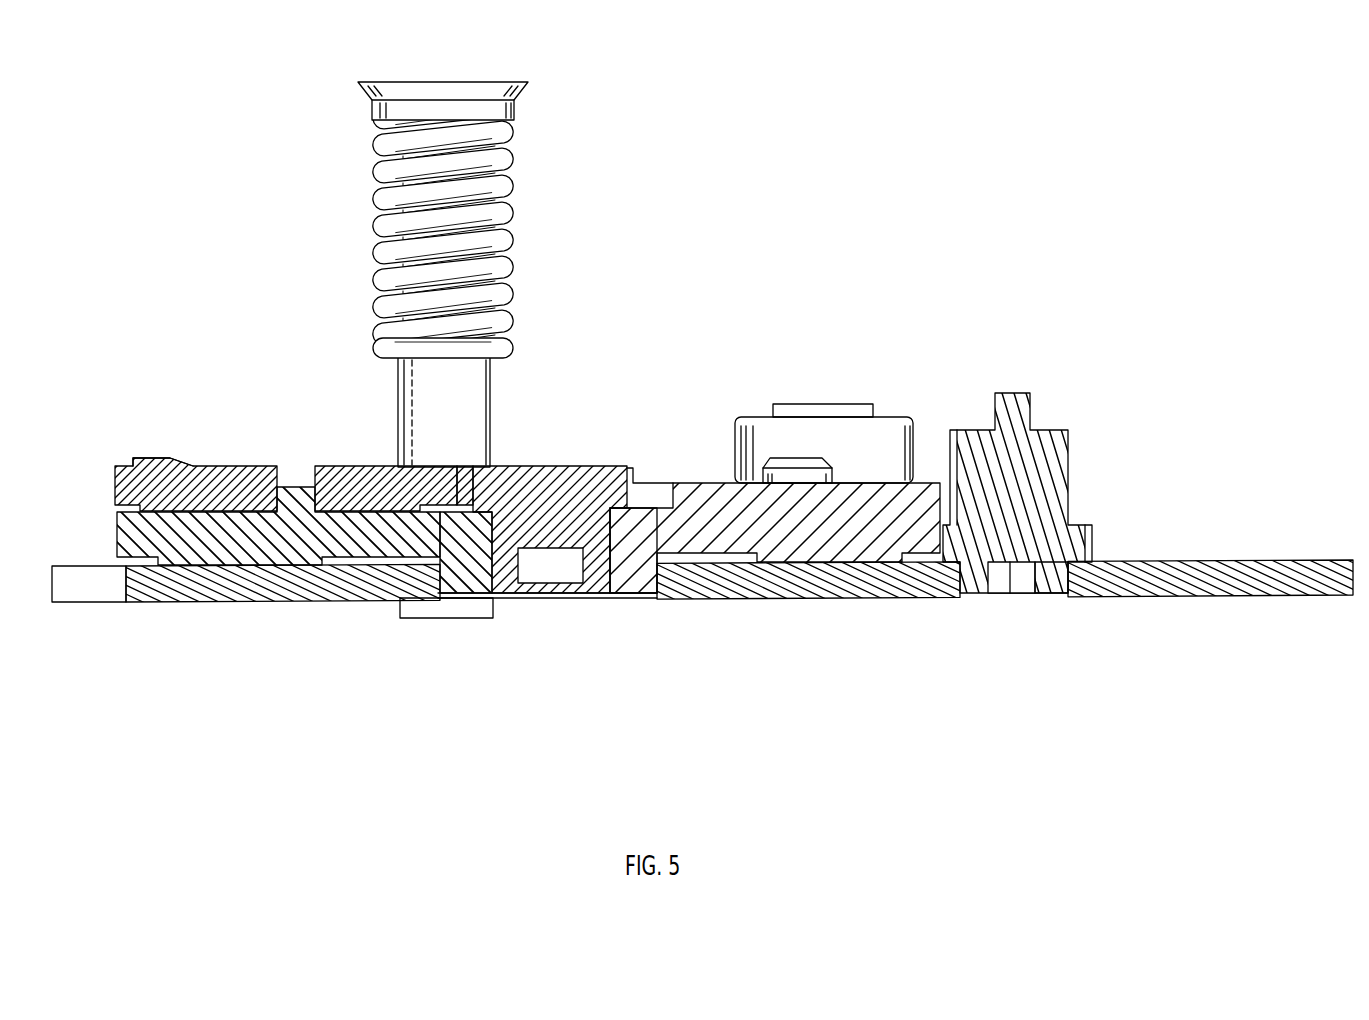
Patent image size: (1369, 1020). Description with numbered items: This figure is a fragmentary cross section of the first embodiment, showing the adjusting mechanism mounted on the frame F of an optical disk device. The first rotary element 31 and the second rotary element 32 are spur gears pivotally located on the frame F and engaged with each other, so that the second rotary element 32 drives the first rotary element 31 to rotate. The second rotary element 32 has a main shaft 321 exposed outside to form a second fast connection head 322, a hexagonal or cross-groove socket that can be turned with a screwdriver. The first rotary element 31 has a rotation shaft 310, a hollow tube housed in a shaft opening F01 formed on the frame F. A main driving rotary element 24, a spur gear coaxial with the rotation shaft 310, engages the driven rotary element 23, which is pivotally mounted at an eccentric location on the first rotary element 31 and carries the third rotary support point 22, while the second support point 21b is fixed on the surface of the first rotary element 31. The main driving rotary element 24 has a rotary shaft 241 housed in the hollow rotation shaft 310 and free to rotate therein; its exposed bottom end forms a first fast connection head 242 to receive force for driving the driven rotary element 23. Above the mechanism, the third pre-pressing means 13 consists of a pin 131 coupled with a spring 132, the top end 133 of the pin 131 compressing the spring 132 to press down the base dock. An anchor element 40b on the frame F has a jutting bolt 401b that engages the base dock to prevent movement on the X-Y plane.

The third pre-pressing means 13 is at (438, 252).
The pin 131 is at (475, 378).
The spring 132 is at (500, 150).
The top end 133 is at (493, 88).
The third rotary support point 22 is at (150, 455).
The driven rotary element 23 is at (230, 478).
The main driving rotary element 24 is at (547, 530).
The rotary shaft 241 is at (499, 578).
The first fast connection head 242 is at (542, 556).
The first rotary element 31 is at (773, 540).
The rotation shaft 310 is at (640, 575).
The second support point 21b is at (795, 458).
The jutting bolt 401b is at (830, 404).
The anchor element 40b is at (900, 435).
The second rotary element 32 is at (1014, 531).
The main shaft 321 is at (1042, 578).
The second fast connection head 322 is at (1001, 575).
The shaft opening F01 is at (600, 602).
The frame F is at (1266, 587).